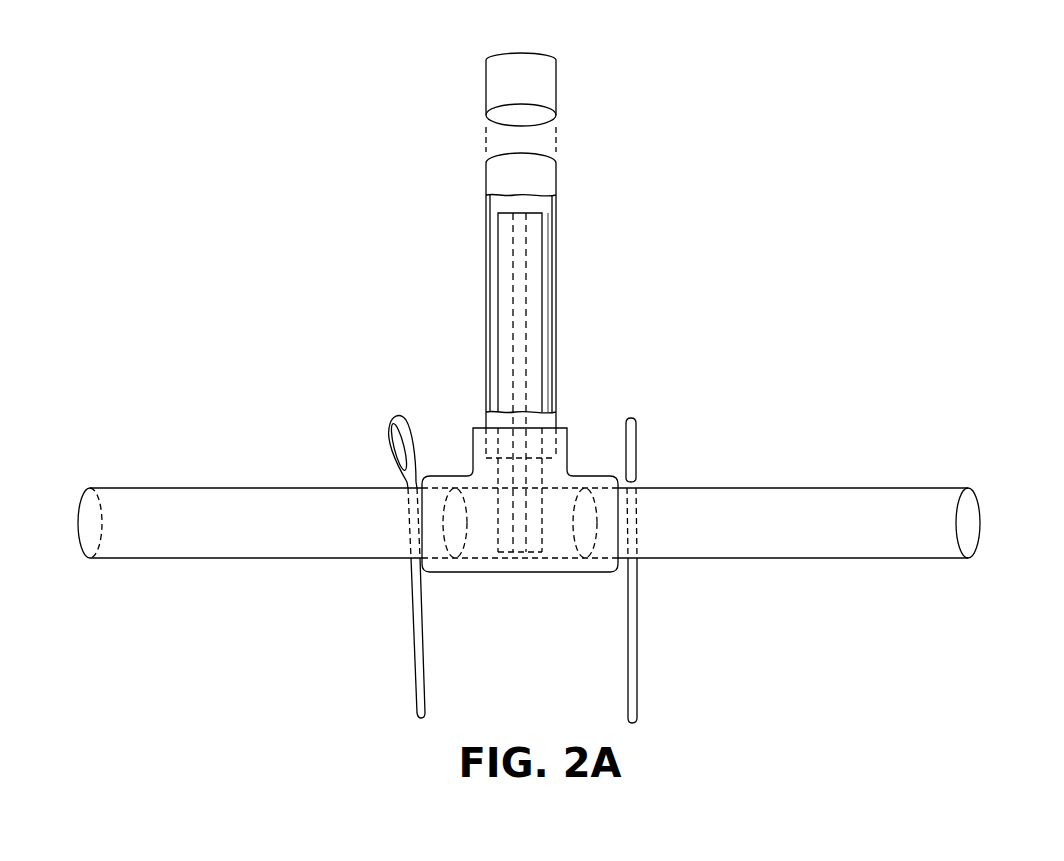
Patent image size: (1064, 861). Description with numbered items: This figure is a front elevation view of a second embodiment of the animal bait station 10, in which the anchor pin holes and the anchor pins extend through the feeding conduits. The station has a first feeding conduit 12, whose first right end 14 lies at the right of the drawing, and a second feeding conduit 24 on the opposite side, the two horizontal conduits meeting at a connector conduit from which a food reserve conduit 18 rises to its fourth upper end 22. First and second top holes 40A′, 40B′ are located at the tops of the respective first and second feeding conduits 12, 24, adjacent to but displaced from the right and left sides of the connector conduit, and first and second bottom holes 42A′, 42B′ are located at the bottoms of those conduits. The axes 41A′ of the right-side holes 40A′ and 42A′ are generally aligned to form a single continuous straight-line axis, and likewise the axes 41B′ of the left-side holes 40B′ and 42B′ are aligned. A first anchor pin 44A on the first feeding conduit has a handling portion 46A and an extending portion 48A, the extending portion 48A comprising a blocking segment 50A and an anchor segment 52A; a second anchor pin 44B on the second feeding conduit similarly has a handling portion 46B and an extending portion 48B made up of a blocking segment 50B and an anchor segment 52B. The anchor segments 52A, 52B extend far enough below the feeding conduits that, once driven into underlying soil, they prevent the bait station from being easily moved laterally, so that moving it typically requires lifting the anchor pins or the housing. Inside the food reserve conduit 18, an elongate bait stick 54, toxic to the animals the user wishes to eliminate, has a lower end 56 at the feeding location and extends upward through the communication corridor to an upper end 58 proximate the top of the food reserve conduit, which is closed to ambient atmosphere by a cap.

The bait station 10 is at (672, 103).
The first feeding conduit 12 is at (849, 486).
The first right end 14 is at (966, 522).
The food reserve conduit 18 is at (556, 178).
The fourth upper end 22 is at (520, 157).
The second feeding conduit 24 is at (221, 486).
The first top hole 40A′ is at (638, 498).
The second top hole 40B′ is at (406, 498).
The axes of holes on the right side 41A′ is at (638, 515).
The axes of holes on the left side 41B′ is at (406, 515).
The first bottom hole 42A′ is at (638, 548).
The second bottom hole 42B′ is at (408, 548).
The first anchor pin 44A is at (637, 694).
The second anchor pin 44B is at (414, 680).
The handling portion 46A is at (636, 435).
The handling portion 46B is at (386, 435).
The extending portion 48A is at (637, 637).
The extending portion 48B is at (424, 697).
The blocking segment 50A is at (638, 530).
The blocking segment 50B is at (406, 530).
The anchor segment 52A is at (637, 665).
The anchor segment 52B is at (413, 645).
The elongate bait stick 54 is at (547, 270).
The lower end 56 is at (538, 467).
The upper end 58 is at (542, 222).